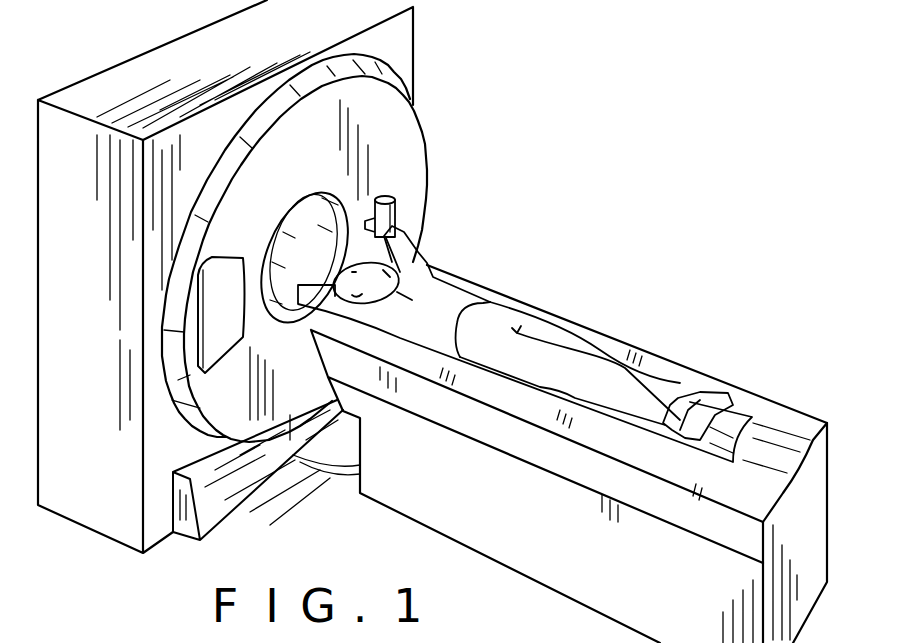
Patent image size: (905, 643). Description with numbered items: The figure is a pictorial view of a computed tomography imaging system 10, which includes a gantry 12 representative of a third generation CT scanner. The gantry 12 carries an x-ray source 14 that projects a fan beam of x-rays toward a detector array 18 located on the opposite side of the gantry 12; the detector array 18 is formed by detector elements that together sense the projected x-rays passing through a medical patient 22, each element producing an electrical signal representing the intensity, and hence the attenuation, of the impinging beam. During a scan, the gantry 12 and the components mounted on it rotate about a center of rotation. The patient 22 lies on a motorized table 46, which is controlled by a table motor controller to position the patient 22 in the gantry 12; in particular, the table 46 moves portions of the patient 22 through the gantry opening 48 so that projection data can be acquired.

The computed tomography imaging system 10 is at (334, 486).
The gantry 12 is at (70, 148).
The x-ray source 14 is at (396, 218).
The detector array 18 is at (213, 333).
The medical patient 22 is at (437, 298).
The motorized table 46 is at (443, 496).
The gantry opening 48 is at (313, 228).